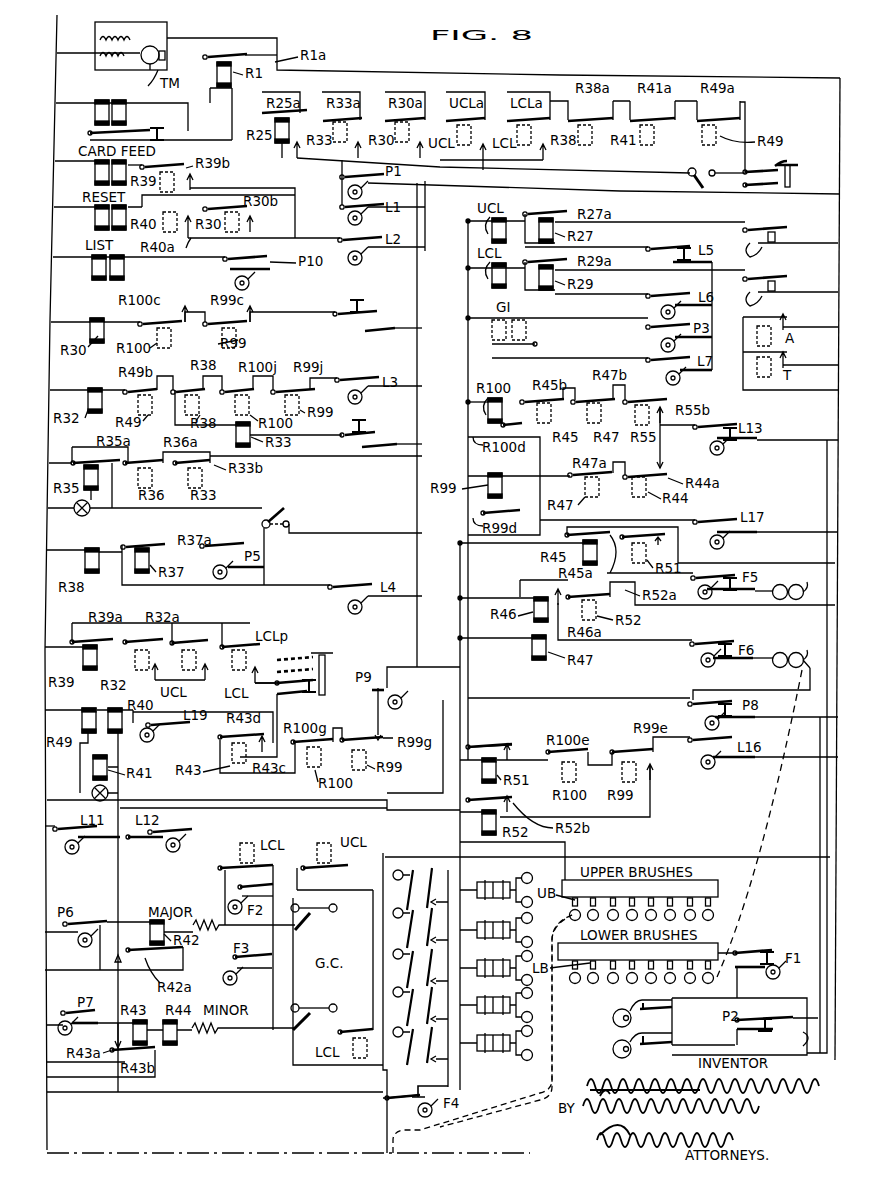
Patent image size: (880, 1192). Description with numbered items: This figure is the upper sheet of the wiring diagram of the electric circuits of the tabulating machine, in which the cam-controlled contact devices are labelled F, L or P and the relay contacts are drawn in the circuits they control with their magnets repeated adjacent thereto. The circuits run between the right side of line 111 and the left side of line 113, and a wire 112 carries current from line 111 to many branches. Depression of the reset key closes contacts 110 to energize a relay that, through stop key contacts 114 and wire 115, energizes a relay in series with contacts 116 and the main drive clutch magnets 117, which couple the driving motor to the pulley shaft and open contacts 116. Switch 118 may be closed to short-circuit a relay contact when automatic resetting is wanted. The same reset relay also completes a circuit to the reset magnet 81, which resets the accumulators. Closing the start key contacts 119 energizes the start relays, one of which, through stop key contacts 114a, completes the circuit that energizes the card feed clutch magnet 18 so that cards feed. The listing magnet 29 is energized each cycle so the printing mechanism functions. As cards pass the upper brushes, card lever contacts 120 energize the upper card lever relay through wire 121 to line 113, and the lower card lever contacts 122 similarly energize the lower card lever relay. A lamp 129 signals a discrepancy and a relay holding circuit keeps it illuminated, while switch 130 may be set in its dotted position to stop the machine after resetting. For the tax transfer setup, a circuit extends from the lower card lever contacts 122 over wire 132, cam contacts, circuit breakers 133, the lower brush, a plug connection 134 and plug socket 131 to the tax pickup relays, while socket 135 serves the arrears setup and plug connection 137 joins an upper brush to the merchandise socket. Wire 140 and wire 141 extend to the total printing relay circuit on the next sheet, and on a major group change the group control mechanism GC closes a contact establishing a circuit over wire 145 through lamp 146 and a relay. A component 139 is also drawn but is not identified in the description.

The line 111 is at (838, 114).
The wire 112 is at (422, 296).
The line 113 is at (62, 548).
The stop key contacts 114 is at (758, 189).
The stop key contacts 114a is at (288, 698).
The wire 115 is at (550, 171).
The contacts 116 is at (172, 138).
The main drive clutch magnets 117 is at (95, 112).
The switch 118 is at (690, 181).
The start key contacts 119 is at (360, 446).
The card lever contacts 120 is at (773, 236).
The wire 121 is at (476, 372).
The lower card lever contacts 122 is at (773, 283).
The lamp 129 is at (76, 514).
The switch 130 is at (288, 518).
The plug socket 131 is at (792, 652).
The wire 132 is at (760, 390).
The circuit breakers 133 is at (673, 1005).
The plug connection 134 is at (760, 820).
The socket 135 is at (790, 584).
The plug connection 137 is at (551, 1043).
The line 139 is at (800, 1040).
The wire 140 is at (50, 1108).
The wire 141 is at (385, 1120).
The wire 145 is at (118, 889).
The lamp 146 is at (92, 798).
The reset key contacts 110 is at (378, 314).
The card feed clutch magnet 18 is at (92, 172).
The reset magnet 81 is at (92, 216).
The listing magnet 29 is at (90, 265).